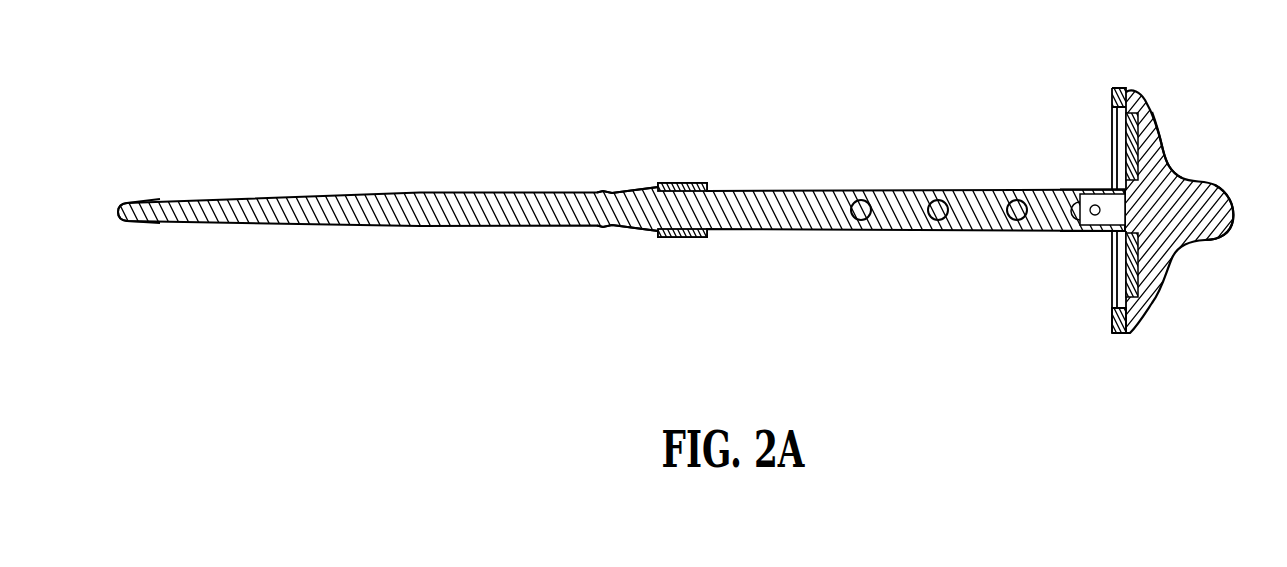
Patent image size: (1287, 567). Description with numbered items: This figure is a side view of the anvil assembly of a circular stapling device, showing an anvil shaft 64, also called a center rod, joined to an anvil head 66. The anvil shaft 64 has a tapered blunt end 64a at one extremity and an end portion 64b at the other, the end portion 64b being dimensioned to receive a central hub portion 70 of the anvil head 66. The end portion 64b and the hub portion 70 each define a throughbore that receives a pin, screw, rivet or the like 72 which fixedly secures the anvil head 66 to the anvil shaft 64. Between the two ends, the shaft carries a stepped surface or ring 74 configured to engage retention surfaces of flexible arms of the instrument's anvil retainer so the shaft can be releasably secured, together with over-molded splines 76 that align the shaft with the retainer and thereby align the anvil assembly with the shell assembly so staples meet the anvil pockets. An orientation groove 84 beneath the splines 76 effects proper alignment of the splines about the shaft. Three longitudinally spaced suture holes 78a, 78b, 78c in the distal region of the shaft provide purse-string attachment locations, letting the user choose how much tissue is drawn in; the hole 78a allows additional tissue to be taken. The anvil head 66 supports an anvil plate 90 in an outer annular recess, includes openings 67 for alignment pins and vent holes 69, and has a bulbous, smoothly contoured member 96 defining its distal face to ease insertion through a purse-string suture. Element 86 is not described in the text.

The anvil shaft 64 is at (727, 191).
The tapered blunt end 64a is at (127, 201).
The end portion 64b is at (1072, 233).
The anvil head 66 is at (1197, 180).
The openings 67 is at (1132, 138).
The vent holes 69 is at (1167, 162).
The central hub portion 70 is at (1088, 236).
The pin 72 is at (1093, 205).
The stepped surface or ring 74 is at (604, 227).
The over-molded splines 76 is at (690, 237).
The suture hole 78a is at (862, 200).
The suture hole 78b is at (938, 200).
The suture hole 78c is at (1017, 200).
The orientation groove 84 is at (635, 192).
The lower plate flange 86 is at (1110, 289).
The anvil plate 90 is at (1112, 92).
The bulbous member 96 is at (1207, 223).